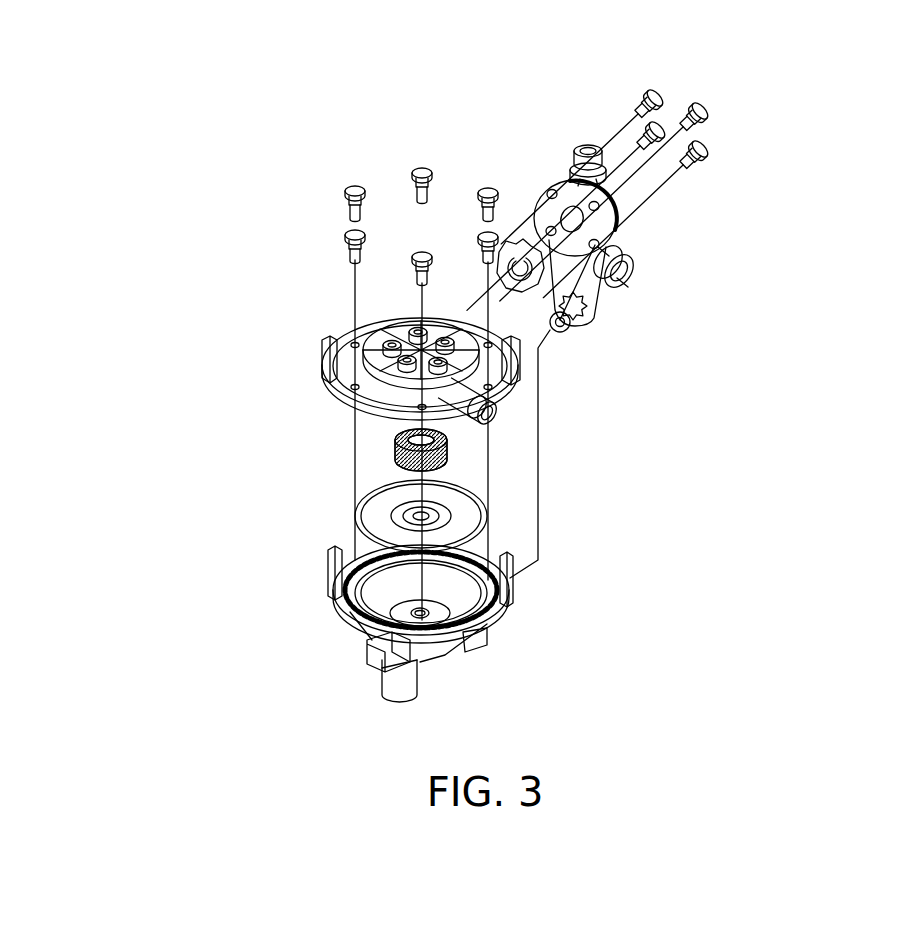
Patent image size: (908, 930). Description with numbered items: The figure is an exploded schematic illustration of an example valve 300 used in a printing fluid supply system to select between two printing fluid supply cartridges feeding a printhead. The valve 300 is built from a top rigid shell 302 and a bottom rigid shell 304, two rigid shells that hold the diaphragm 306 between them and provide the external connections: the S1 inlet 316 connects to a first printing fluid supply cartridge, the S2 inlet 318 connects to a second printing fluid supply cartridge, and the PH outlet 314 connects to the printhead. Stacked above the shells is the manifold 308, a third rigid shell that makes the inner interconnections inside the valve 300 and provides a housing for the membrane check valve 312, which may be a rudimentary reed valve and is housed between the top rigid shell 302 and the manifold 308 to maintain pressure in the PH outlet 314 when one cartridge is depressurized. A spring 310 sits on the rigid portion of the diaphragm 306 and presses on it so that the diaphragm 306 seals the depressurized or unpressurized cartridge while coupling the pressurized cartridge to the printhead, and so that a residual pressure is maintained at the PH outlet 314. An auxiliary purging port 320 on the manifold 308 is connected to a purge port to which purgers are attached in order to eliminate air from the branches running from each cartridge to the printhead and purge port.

The valve 300 is at (522, 706).
The top rigid shell 302 is at (328, 334).
The bottom rigid shell 304 is at (502, 631).
The diaphragm 306 is at (354, 518).
The manifold 308 is at (602, 325).
The spring 310 is at (392, 445).
The membrane check valve 312 is at (512, 227).
The PH outlet 314 is at (592, 141).
The S1 inlet 316 is at (382, 698).
The S2 inlet 318 is at (503, 416).
The auxiliary purging port 320 is at (636, 266).